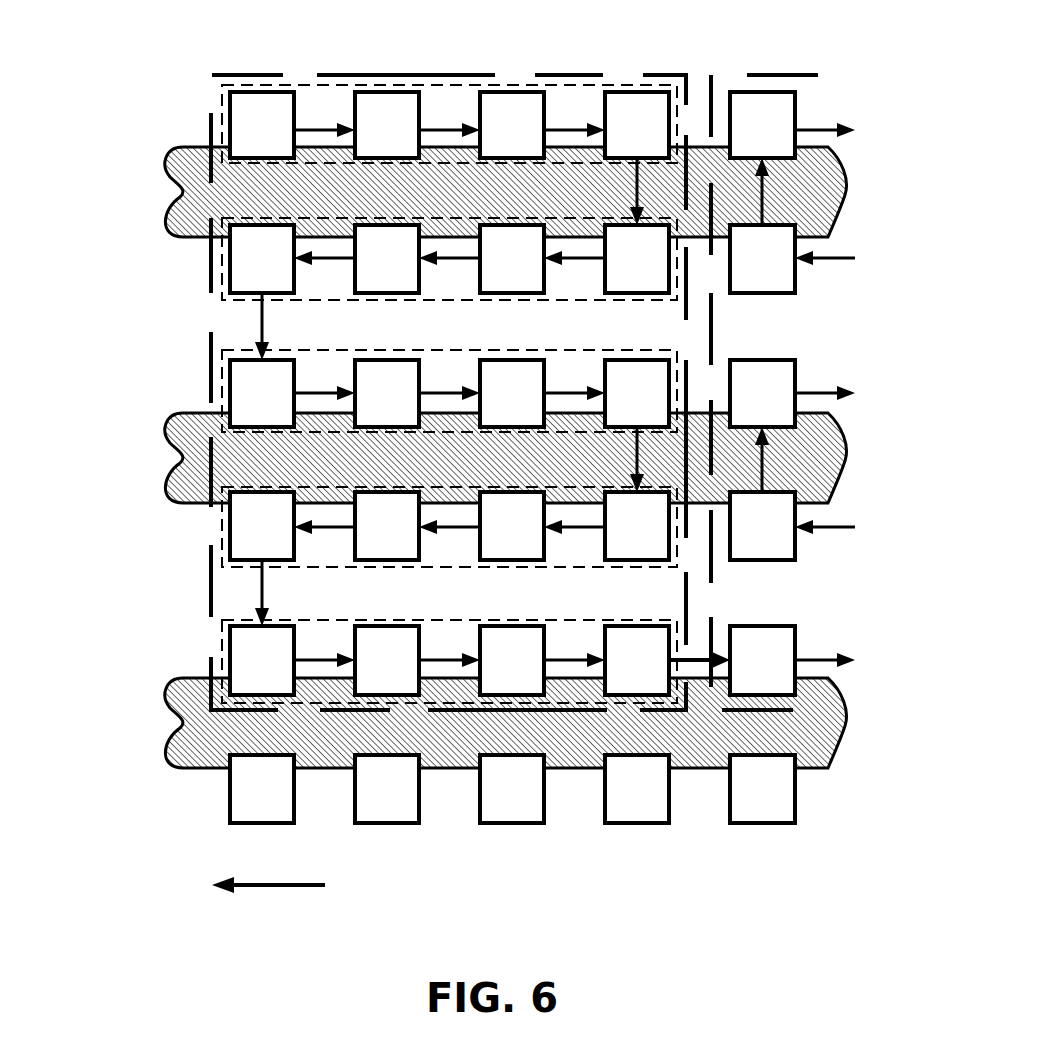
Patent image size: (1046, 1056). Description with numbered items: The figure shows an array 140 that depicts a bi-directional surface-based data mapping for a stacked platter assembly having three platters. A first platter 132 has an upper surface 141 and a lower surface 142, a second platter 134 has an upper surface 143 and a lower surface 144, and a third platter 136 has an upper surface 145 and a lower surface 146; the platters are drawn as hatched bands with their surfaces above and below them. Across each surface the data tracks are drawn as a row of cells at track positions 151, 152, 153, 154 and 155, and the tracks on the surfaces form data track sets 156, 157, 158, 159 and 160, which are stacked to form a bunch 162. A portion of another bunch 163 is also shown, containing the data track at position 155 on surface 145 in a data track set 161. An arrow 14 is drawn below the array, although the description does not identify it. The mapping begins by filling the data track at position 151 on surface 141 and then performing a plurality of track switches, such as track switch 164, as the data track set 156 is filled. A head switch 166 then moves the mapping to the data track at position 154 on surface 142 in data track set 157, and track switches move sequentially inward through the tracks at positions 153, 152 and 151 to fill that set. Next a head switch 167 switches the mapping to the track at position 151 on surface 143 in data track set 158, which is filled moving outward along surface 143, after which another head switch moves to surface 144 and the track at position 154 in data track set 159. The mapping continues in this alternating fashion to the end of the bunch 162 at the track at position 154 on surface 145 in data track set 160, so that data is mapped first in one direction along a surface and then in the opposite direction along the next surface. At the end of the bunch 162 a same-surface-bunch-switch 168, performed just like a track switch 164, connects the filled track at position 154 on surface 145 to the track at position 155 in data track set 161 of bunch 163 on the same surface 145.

The direction of paper travel 14 is at (286, 885).
The first platter 132 is at (302, 199).
The second platter 134 is at (302, 474).
The third platter 136 is at (302, 735).
The array 140 is at (158, 792).
The upper surface of first platter 141 is at (195, 150).
The lower surface of first platter 142 is at (195, 234).
The upper surface of second platter 143 is at (195, 416).
The lower surface of second platter 144 is at (195, 501).
The upper surface of third platter 145 is at (195, 680).
The lower surface of third platter 146 is at (201, 770).
The data track 151 is at (265, 66).
The second column of cells 152 is at (383, 66).
The third column of cells 153 is at (508, 66).
The data track 154 is at (633, 66).
The data track 155 is at (760, 66).
The data track set 156 is at (430, 117).
The data track set 157 is at (430, 294).
The data track set 158 is at (430, 384).
The data track set 159 is at (430, 560).
The data track set 160 is at (430, 649).
The data track set 161 is at (804, 649).
The bunch 162 is at (572, 712).
The bunch 163 is at (733, 712).
The track switch 164 is at (300, 130).
The head switch 166 is at (637, 185).
The head switch 167 is at (258, 320).
The same-surface-bunch-switch 168 is at (692, 648).